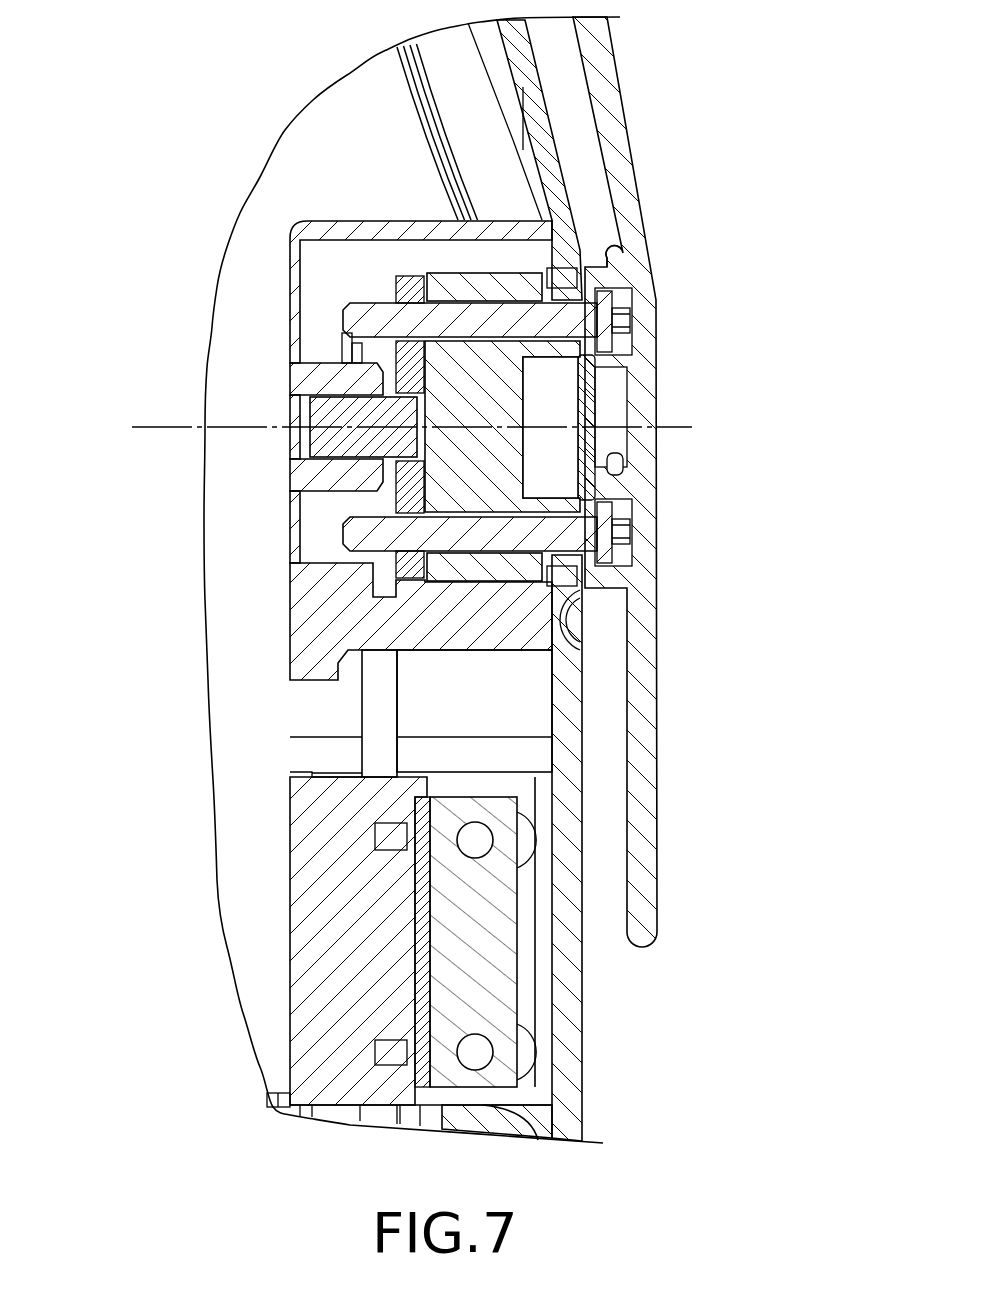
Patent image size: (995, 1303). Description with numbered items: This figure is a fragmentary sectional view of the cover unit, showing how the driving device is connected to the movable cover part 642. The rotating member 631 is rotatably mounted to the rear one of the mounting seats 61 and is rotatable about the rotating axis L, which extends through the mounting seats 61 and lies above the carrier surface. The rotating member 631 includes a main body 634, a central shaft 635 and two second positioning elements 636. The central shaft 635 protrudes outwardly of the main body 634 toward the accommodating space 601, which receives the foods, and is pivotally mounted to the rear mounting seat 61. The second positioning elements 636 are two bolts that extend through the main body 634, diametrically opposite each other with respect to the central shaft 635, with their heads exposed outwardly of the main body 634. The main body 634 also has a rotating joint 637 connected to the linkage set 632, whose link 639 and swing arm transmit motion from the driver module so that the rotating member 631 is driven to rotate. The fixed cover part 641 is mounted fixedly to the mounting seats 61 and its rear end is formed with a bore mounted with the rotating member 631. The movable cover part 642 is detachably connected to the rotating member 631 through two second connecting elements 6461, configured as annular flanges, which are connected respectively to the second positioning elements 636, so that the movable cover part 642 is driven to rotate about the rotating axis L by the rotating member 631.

The fixed cover part 641 is at (545, 95).
The main body 634 is at (447, 272).
The rotating member 631 is at (492, 268).
The second connecting elements 6461 is at (612, 245).
The second positioning elements 636 is at (615, 297).
The central shaft 635 is at (330, 410).
The rotating joint 637 is at (340, 352).
The accommodating space 601 is at (231, 645).
The movable cover part 642 is at (648, 790).
The mounting seats 61 is at (310, 935).
The linkage set 632 is at (293, 868).
The link 639 is at (377, 712).
The rotating axis L is at (429, 430).